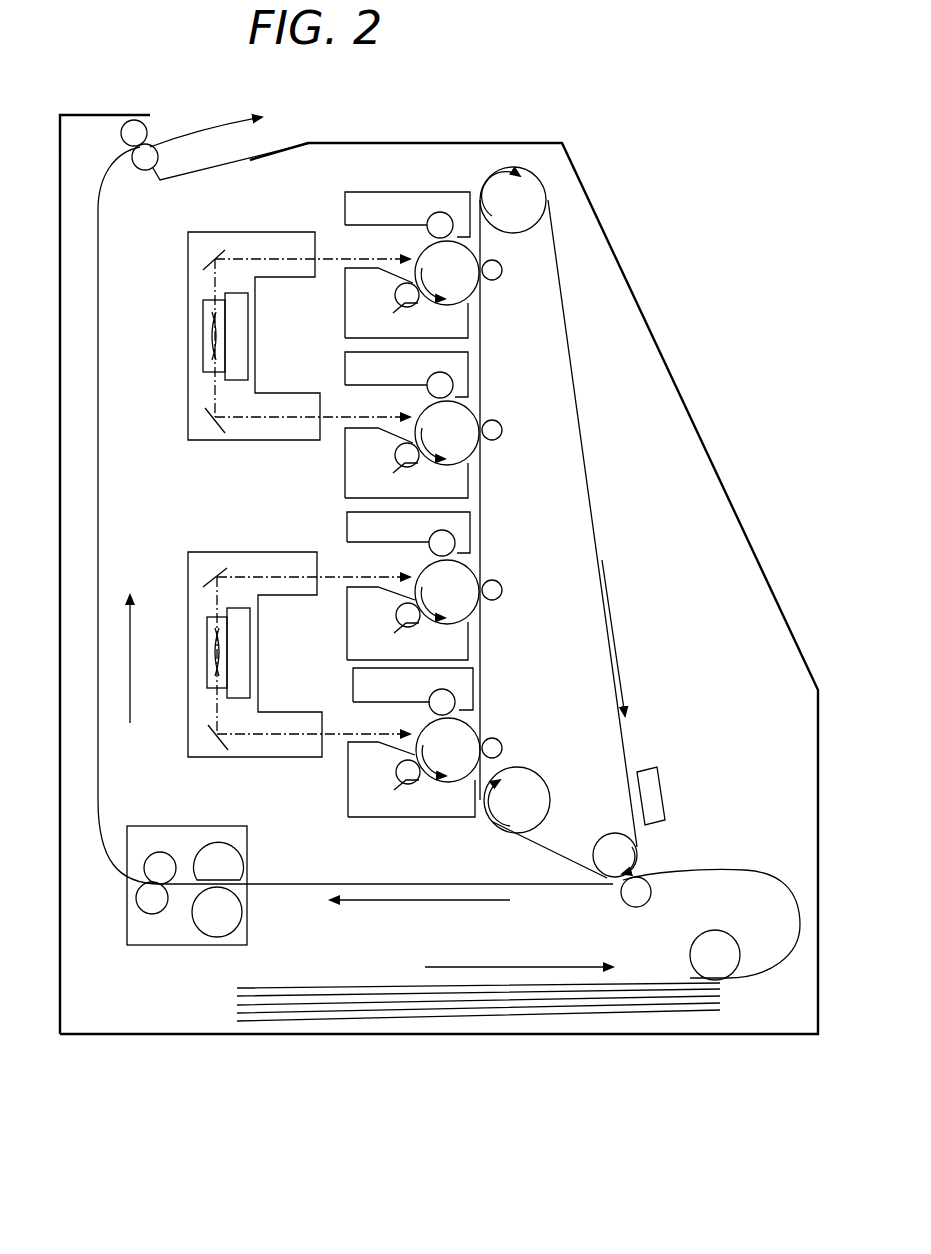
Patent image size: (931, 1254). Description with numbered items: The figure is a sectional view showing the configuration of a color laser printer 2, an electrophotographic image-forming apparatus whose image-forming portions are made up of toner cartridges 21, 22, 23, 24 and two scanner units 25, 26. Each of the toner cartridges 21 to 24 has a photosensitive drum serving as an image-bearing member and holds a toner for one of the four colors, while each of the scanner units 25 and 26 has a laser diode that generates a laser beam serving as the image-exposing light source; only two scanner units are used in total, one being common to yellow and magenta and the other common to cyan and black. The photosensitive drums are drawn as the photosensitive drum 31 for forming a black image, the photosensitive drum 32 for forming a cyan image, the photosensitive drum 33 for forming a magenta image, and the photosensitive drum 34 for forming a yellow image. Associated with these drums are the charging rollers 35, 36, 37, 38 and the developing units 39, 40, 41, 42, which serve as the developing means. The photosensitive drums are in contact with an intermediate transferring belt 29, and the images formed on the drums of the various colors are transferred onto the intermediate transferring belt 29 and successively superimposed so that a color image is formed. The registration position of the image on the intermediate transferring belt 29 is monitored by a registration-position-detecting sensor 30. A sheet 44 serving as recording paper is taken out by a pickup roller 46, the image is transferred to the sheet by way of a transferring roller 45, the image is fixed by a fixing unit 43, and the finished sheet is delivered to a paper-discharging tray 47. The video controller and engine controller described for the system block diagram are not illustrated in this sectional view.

The color laser printer 2 is at (617, 253).
The toner cartridge 21 is at (352, 210).
The toner cartridge 22 is at (352, 371).
The toner cartridge 23 is at (354, 528).
The toner cartridge 24 is at (354, 686).
The scanner unit 25 is at (227, 231).
The scanner unit 26 is at (228, 551).
The intermediate transferring belt 29 is at (586, 462).
The registration-position-detecting sensor 30 is at (660, 786).
The photosensitive drum 31 is at (463, 283).
The photosensitive drum 32 is at (476, 416).
The photosensitive drum 33 is at (476, 574).
The photosensitive drum 34 is at (477, 734).
The charging roller 35 is at (430, 226).
The charging roller 36 is at (430, 386).
The charging roller 37 is at (432, 544).
The charging roller 38 is at (432, 703).
The developing unit 39 is at (395, 298).
The developing unit 40 is at (395, 458).
The developing unit 41 is at (396, 618).
The developing unit 42 is at (396, 776).
The fixing unit 43 is at (210, 826).
The sheet 44 is at (645, 1022).
The transferring roller 45 is at (640, 848).
The pickup roller 46 is at (724, 930).
The paper-discharging tray 47 is at (267, 152).